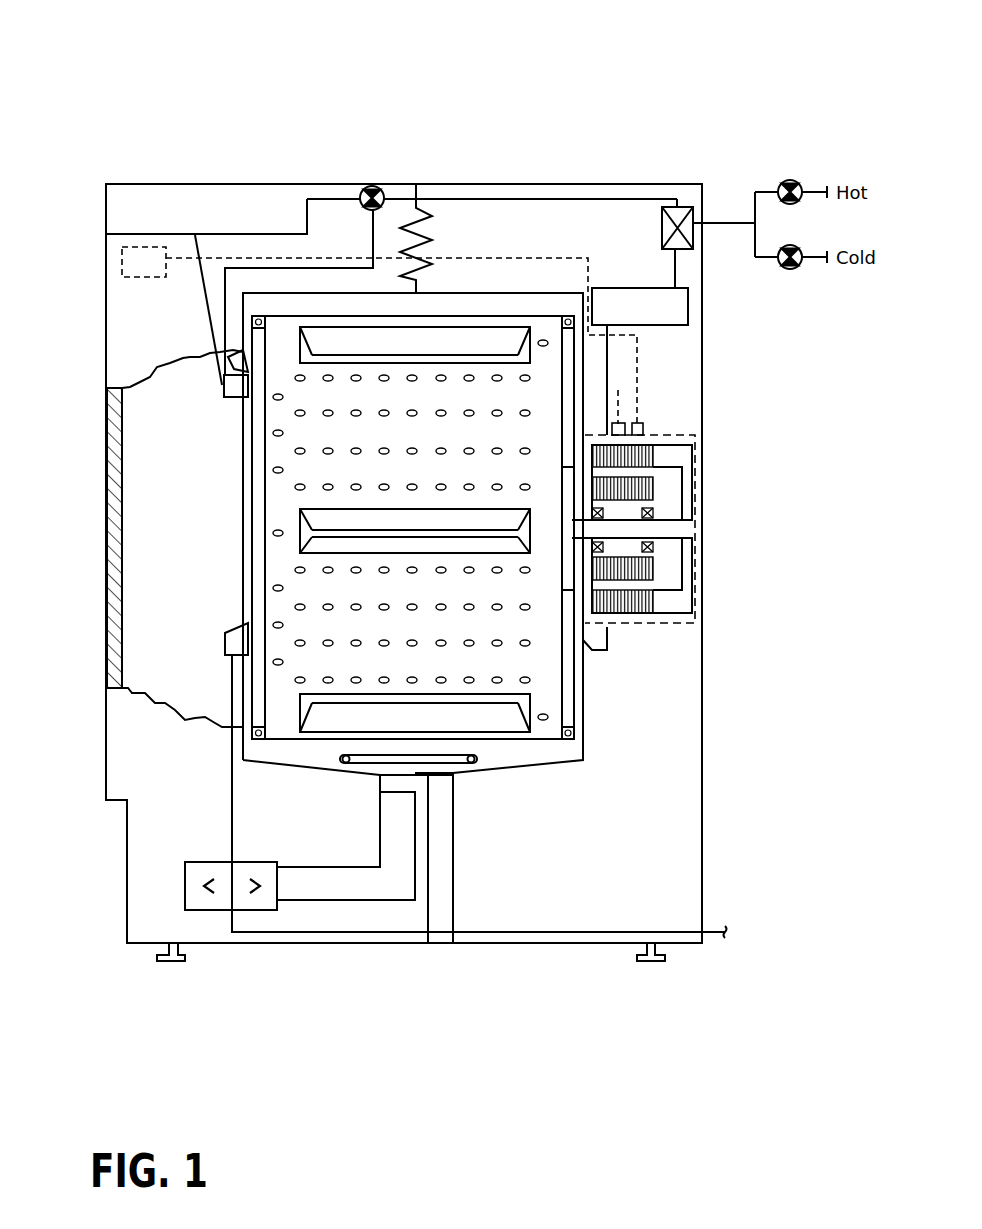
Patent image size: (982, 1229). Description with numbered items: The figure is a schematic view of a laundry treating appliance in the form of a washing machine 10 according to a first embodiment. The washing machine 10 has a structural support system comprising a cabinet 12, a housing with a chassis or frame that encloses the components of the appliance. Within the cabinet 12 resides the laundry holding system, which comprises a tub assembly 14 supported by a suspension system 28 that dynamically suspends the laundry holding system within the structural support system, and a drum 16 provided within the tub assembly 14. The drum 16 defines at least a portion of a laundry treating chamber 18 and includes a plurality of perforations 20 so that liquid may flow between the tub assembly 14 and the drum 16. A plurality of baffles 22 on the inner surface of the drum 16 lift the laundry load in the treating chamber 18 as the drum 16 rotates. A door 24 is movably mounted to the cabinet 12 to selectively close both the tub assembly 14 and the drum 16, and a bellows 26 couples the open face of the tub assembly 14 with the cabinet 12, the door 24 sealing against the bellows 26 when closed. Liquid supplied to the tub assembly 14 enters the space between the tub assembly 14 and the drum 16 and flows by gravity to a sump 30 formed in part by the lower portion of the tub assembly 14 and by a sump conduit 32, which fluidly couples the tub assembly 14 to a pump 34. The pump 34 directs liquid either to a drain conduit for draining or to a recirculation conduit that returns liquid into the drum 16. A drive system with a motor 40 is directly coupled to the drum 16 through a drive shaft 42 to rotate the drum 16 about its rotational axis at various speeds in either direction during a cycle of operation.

The washing machine 10 is at (620, 34).
The cabinet 12 is at (619, 181).
The tub assembly 14 is at (450, 292).
The drum 16 is at (335, 315).
The laundry treating chamber 18 is at (391, 441).
The perforations 20 is at (533, 413).
The baffles 22 is at (508, 720).
The door 24 is at (103, 518).
The bellows 26 is at (148, 697).
The suspension system 28 is at (386, 195).
The sump 30 is at (460, 781).
The sump conduit 32 is at (392, 878).
The pump 34 is at (209, 916).
The motor 40 is at (697, 435).
The drive shaft 42 is at (663, 530).